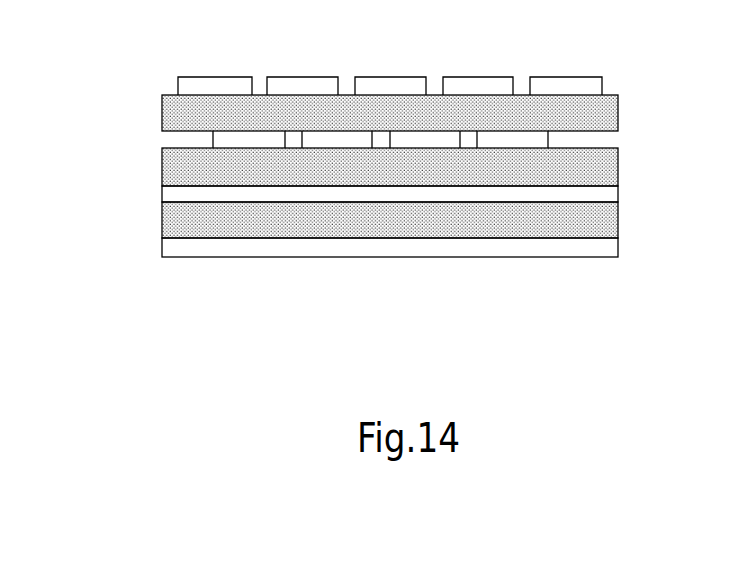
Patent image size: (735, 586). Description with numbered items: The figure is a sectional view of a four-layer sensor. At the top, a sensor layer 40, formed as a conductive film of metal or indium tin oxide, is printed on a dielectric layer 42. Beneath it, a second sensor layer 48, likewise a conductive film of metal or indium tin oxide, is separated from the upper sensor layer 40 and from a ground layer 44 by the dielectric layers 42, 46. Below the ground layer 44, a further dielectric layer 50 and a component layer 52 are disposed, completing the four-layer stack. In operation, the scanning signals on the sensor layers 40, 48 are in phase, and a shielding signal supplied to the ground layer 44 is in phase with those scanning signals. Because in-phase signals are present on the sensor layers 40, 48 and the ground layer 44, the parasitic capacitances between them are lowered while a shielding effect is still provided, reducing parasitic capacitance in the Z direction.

The sensor layer 40 is at (568, 85).
The dielectric layer 42 is at (618, 112).
The ground layer 44 is at (618, 192).
The dielectric layer 46 is at (162, 166).
The sensor layer 48 is at (436, 140).
The dielectric layer 50 is at (162, 222).
The component layer 52 is at (618, 247).